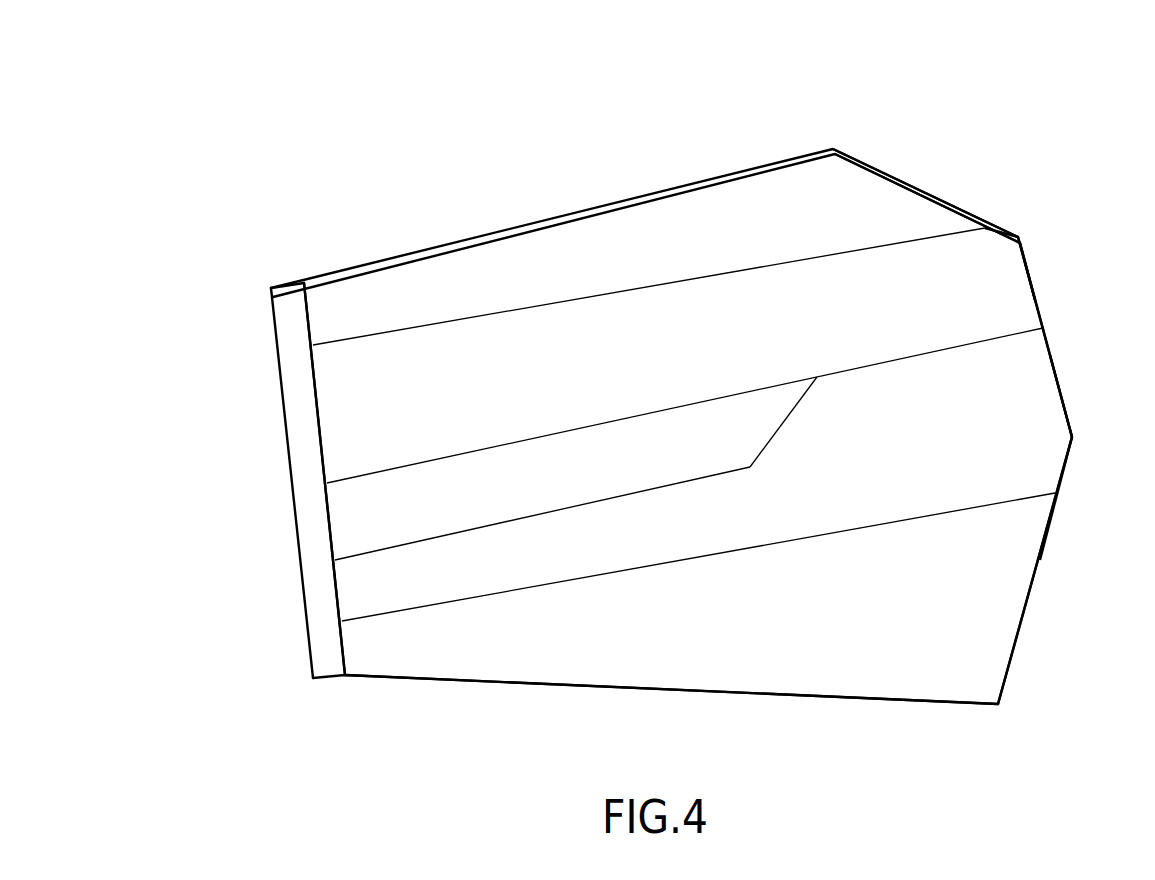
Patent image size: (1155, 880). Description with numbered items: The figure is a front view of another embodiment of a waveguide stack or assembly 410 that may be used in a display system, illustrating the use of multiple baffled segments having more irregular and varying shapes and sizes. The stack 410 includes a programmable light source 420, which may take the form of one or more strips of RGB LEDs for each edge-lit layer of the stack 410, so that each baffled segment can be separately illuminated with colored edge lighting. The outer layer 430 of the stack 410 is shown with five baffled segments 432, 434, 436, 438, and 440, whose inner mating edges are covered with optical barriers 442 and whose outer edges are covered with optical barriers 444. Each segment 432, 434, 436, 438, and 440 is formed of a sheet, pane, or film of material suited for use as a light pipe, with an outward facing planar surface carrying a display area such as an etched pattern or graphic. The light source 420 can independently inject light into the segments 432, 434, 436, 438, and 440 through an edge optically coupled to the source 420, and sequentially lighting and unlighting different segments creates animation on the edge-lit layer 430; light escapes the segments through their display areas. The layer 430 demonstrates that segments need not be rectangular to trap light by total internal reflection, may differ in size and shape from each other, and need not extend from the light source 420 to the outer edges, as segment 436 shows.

The waveguide stack 410 is at (422, 146).
The programmable light source 420 is at (303, 695).
The outer layer 430 is at (1023, 677).
The baffled segment 432 is at (597, 667).
The baffled segment 434 is at (1014, 388).
The baffled segment 436 is at (733, 427).
The baffled segment 438 is at (992, 265).
The baffled segment 440 is at (877, 205).
The optical barriers 442 is at (603, 422).
The optical barriers 444 is at (1047, 528).